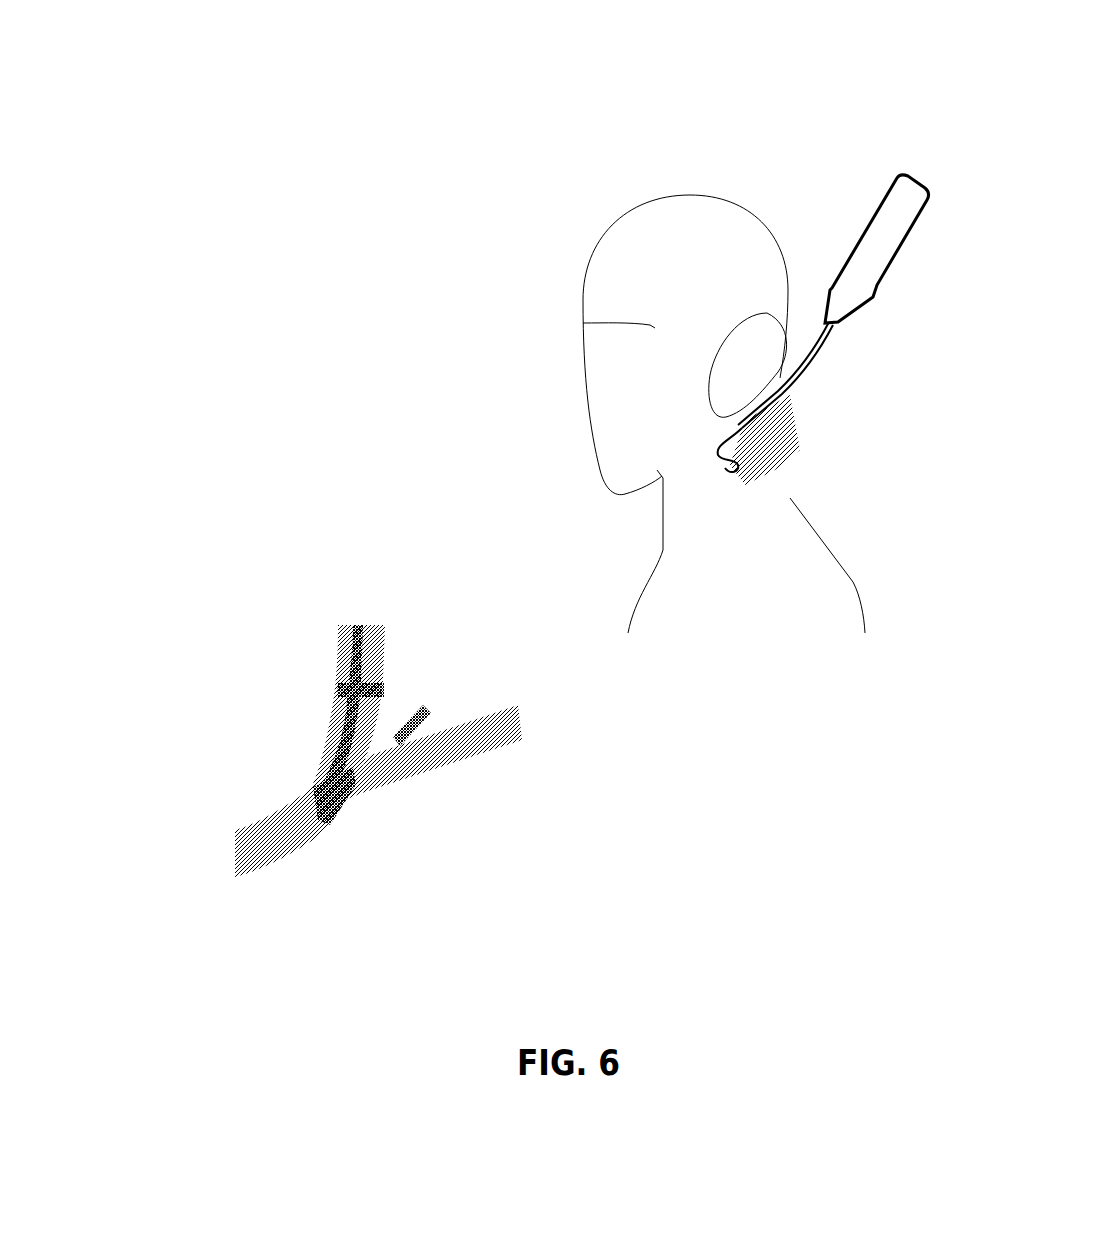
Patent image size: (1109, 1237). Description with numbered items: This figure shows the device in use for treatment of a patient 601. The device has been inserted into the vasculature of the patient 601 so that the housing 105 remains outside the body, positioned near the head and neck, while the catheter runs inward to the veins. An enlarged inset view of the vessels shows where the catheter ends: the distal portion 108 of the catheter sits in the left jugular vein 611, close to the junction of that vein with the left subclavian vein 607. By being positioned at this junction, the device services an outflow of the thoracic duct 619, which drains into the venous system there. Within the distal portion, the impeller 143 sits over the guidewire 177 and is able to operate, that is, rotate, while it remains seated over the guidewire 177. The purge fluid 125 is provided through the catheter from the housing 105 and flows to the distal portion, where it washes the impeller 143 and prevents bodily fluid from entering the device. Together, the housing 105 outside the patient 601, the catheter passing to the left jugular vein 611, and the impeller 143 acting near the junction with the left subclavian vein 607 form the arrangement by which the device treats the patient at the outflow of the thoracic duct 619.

The patient 601 is at (689, 200).
The housing 105 is at (863, 230).
The purge fluid 125 is at (805, 373).
The distal portion 108 is at (292, 700).
The left jugular vein 611 is at (327, 753).
The impeller 143 is at (323, 820).
The guidewire 177 is at (317, 832).
The left subclavian vein 607 is at (405, 773).
The thoracic duct 619 is at (408, 730).